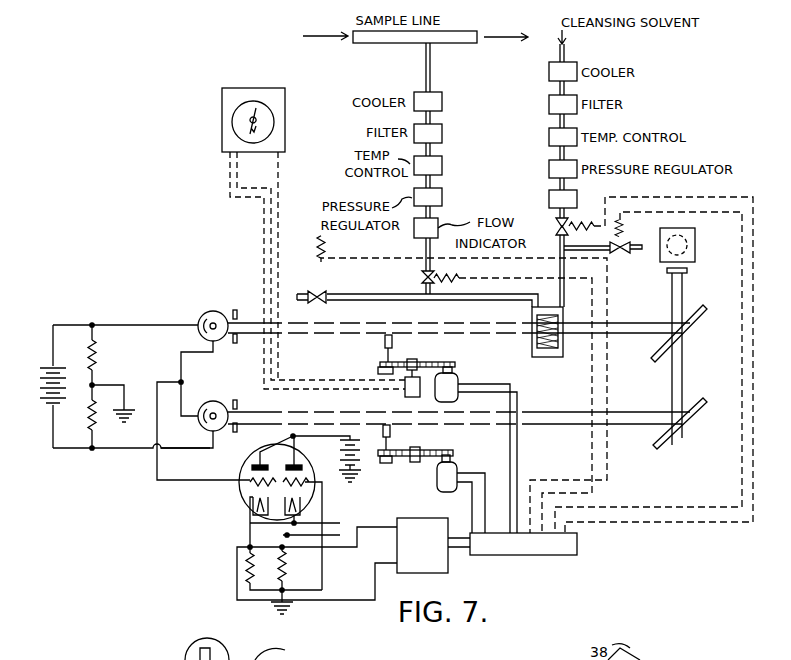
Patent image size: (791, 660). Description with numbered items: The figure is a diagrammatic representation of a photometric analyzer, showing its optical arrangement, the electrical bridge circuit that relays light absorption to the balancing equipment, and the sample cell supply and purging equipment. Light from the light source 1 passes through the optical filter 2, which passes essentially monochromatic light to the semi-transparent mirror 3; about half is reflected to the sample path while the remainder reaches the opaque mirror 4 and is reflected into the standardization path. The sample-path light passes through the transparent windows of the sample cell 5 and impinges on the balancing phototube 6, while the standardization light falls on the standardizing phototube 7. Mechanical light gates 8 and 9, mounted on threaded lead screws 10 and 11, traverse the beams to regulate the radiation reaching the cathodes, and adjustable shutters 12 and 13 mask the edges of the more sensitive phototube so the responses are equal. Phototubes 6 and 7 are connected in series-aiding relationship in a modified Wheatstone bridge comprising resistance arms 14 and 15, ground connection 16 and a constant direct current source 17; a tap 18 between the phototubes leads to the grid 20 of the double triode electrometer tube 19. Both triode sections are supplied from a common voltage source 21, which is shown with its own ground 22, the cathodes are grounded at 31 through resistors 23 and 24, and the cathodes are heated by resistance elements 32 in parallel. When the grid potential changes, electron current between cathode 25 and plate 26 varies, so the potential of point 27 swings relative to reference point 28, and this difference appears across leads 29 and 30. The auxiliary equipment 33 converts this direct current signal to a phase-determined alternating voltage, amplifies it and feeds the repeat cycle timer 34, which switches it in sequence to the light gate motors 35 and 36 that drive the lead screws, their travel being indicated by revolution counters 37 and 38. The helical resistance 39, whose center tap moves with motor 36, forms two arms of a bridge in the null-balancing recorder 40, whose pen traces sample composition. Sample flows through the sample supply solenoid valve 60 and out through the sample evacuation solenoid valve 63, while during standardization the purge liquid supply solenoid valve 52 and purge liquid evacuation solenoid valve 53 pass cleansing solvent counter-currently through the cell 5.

The light source 1 is at (695, 245).
The optical filter 2 is at (687, 271).
The semi-transparent mirror 3 is at (690, 334).
The opaque mirror 4 is at (687, 425).
The sample cell 5 is at (563, 318).
The balancing phototube 6 is at (204, 311).
The standardizing phototube 7 is at (213, 402).
The light gate 8 is at (385, 344).
The light gate 9 is at (383, 432).
The threaded lead screw 10 is at (392, 360).
The threaded lead screw 11 is at (390, 448).
The adjustable shutter 12 is at (235, 310).
The adjustable shutter 13 is at (235, 400).
The resistance arm 14 is at (97, 355).
The resistance arm 15 is at (90, 428).
The ground connection 16 is at (125, 408).
The source of direct current potential 17 is at (50, 368).
The tap 18 is at (176, 388).
The electrometer tube 19 is at (318, 475).
The grid 20 is at (245, 480).
The voltage source 21 is at (345, 450).
The ground 22 is at (354, 476).
The resistor 23 is at (286, 570).
The resistor 24 is at (248, 580).
The cathode 25 is at (250, 500).
The plate 26 is at (252, 460).
The point 27 is at (237, 547).
The point 28 is at (262, 554).
The lead 29 is at (236, 560).
The lead 30 is at (340, 548).
The ground 31 is at (296, 609).
The resistance elements 32 is at (248, 523).
The auxiliary equipment 33 is at (448, 568).
The repeat cycle timer 34 is at (545, 557).
The light gate motor 35 is at (457, 470).
The light gate motor 36 is at (458, 378).
The revolution counter 37 is at (388, 463).
The revolution counter 38 is at (378, 370).
The helical type resistance 39 is at (410, 397).
The recorder 40 is at (222, 122).
The purge liquid supply solenoid valve 52 is at (568, 226).
The purge liquid evacuation solenoid valve 53 is at (326, 293).
The sample supply solenoid valve 60 is at (421, 277).
The sample evacuation solenoid valve 63 is at (622, 255).